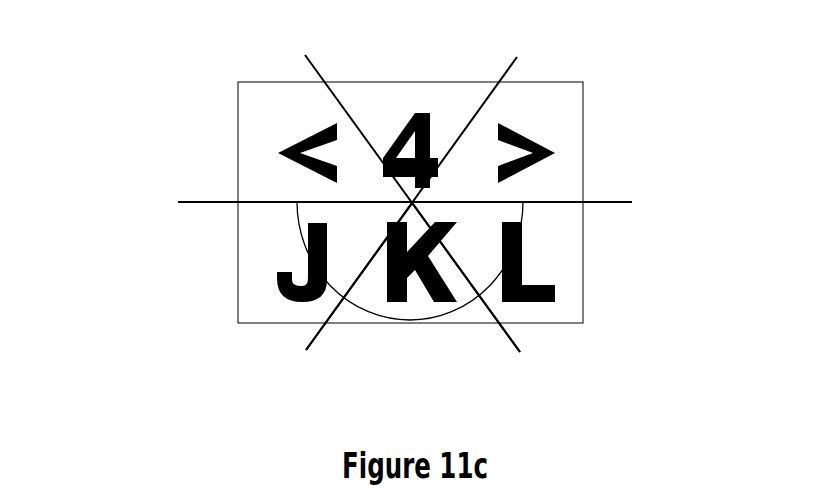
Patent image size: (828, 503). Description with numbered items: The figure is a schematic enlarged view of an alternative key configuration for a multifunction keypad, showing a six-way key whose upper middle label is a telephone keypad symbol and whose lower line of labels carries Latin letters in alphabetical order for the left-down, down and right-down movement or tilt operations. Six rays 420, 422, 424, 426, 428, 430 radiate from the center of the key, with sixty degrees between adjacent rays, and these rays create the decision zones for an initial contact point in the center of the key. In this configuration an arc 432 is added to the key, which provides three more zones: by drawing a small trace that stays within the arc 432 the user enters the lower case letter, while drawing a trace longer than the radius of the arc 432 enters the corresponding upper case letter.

The ray 420 is at (298, 50).
The ray 422 is at (522, 50).
The ray 424 is at (640, 190).
The ray 426 is at (524, 356).
The ray 428 is at (303, 355).
The ray 430 is at (168, 198).
The arc 432 is at (481, 310).